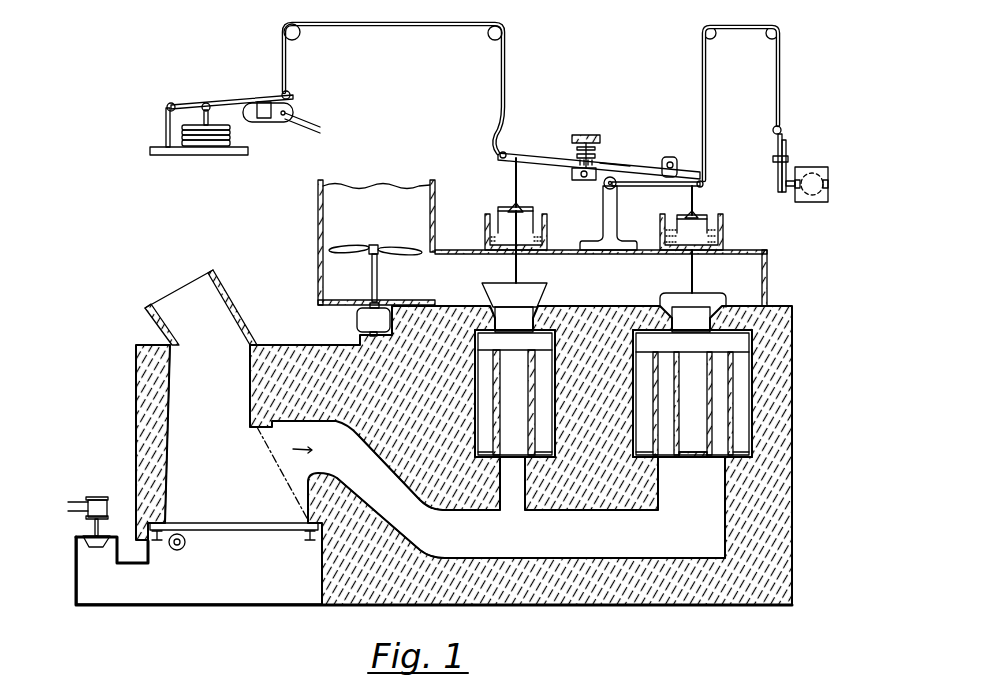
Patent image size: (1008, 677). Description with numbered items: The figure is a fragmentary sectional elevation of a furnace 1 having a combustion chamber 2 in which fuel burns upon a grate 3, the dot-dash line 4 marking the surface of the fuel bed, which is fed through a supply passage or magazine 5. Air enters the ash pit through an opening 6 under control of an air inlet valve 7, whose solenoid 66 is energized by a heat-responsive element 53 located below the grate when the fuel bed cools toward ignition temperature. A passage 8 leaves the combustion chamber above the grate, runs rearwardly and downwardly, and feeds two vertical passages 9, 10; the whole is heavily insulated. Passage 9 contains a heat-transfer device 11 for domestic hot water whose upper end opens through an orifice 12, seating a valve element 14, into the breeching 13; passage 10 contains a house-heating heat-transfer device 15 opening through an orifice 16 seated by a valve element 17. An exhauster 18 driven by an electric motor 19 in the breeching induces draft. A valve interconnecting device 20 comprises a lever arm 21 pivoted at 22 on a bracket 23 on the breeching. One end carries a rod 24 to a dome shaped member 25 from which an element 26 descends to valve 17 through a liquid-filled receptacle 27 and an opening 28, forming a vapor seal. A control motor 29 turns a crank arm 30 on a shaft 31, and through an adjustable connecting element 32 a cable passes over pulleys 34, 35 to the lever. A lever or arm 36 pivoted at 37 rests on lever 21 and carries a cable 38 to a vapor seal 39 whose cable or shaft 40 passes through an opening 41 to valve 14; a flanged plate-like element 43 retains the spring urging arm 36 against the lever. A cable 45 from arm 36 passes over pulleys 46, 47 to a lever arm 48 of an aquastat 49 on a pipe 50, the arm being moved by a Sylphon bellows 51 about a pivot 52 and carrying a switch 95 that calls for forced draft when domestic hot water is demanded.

The furnace 1 is at (357, 607).
The combustion chamber 2 is at (236, 503).
The grate 3 is at (257, 530).
The dot-dash line 4 is at (270, 442).
The supply passage or magazine 5 is at (218, 320).
The opening 6 is at (89, 546).
The air inlet valve 7 is at (105, 538).
The passage 8 is at (470, 546).
The passage 9 is at (512, 504).
The passage 10 is at (702, 485).
The heat-transfer device 11 is at (574, 322).
The orifice 12 is at (542, 332).
The breeching or exhaust passage 13 is at (763, 260).
The valve element 14 is at (482, 295).
The heat-transfer device 15 is at (740, 374).
The orifice 16 is at (717, 303).
The valve element 17 is at (670, 296).
The exhauster 18 is at (333, 250).
The electric motor 19 is at (357, 317).
The valve interconnecting device 20 is at (617, 143).
The lever arm 21 is at (634, 184).
The pivot 22 is at (604, 187).
The bracket 23 is at (603, 218).
The rod 24 is at (697, 201).
The dome shaped member 25 is at (716, 215).
The element 26 is at (693, 277).
The receptacle 27 is at (724, 232).
The opening 28 is at (698, 261).
The control motor 29 is at (811, 172).
The crank arm 30 is at (779, 173).
The shaft 31 is at (794, 189).
The adjustable connecting element 32 is at (786, 145).
The pulley 34 is at (780, 35).
The pulley 35 is at (713, 38).
The lever or arm 36 is at (619, 155).
The pivot 37 is at (670, 160).
The cable 38 is at (515, 178).
The vapor seal 39 is at (494, 209).
The cable or shaft 40 is at (518, 270).
The opening 41 is at (513, 257).
The flanged plate-like element 43 is at (594, 134).
The cable 45 is at (508, 82).
The pulley 46 is at (489, 35).
The pulley 47 is at (301, 33).
The lever arm 48 is at (260, 100).
The aquastat 49 is at (152, 127).
The pipe 50 is at (233, 157).
The Sylphon bellows 51 is at (230, 137).
The pivot 52 is at (168, 105).
The heat-responsive element 53 is at (192, 552).
The solenoid 66 is at (110, 496).
The switch 95 is at (293, 108).